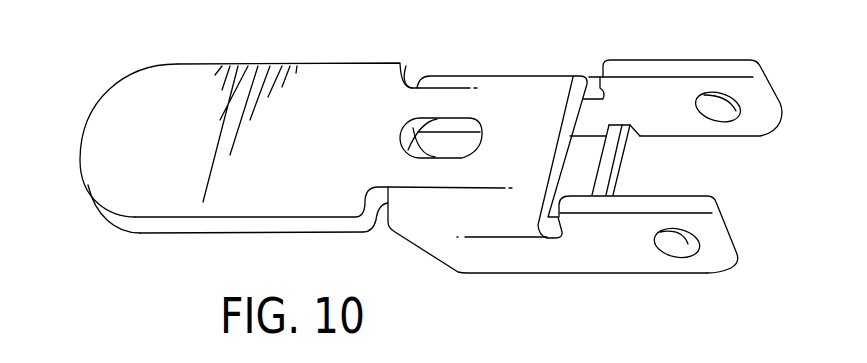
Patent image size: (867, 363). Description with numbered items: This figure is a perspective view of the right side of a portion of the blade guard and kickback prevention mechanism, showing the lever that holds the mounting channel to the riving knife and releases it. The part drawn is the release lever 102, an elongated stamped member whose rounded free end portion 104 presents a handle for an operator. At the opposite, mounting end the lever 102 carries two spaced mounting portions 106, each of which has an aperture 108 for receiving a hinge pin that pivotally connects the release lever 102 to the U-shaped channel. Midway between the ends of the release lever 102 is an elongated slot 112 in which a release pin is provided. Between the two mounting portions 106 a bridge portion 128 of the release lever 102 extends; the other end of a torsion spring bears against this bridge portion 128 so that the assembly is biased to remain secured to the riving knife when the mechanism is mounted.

The release lever 102 is at (460, 76).
The free end portion 104 is at (163, 125).
The mounting portions 106 is at (667, 103).
The aperture 108 is at (723, 112).
The elongated slot 112 is at (420, 132).
The bridge portion 128 is at (607, 172).